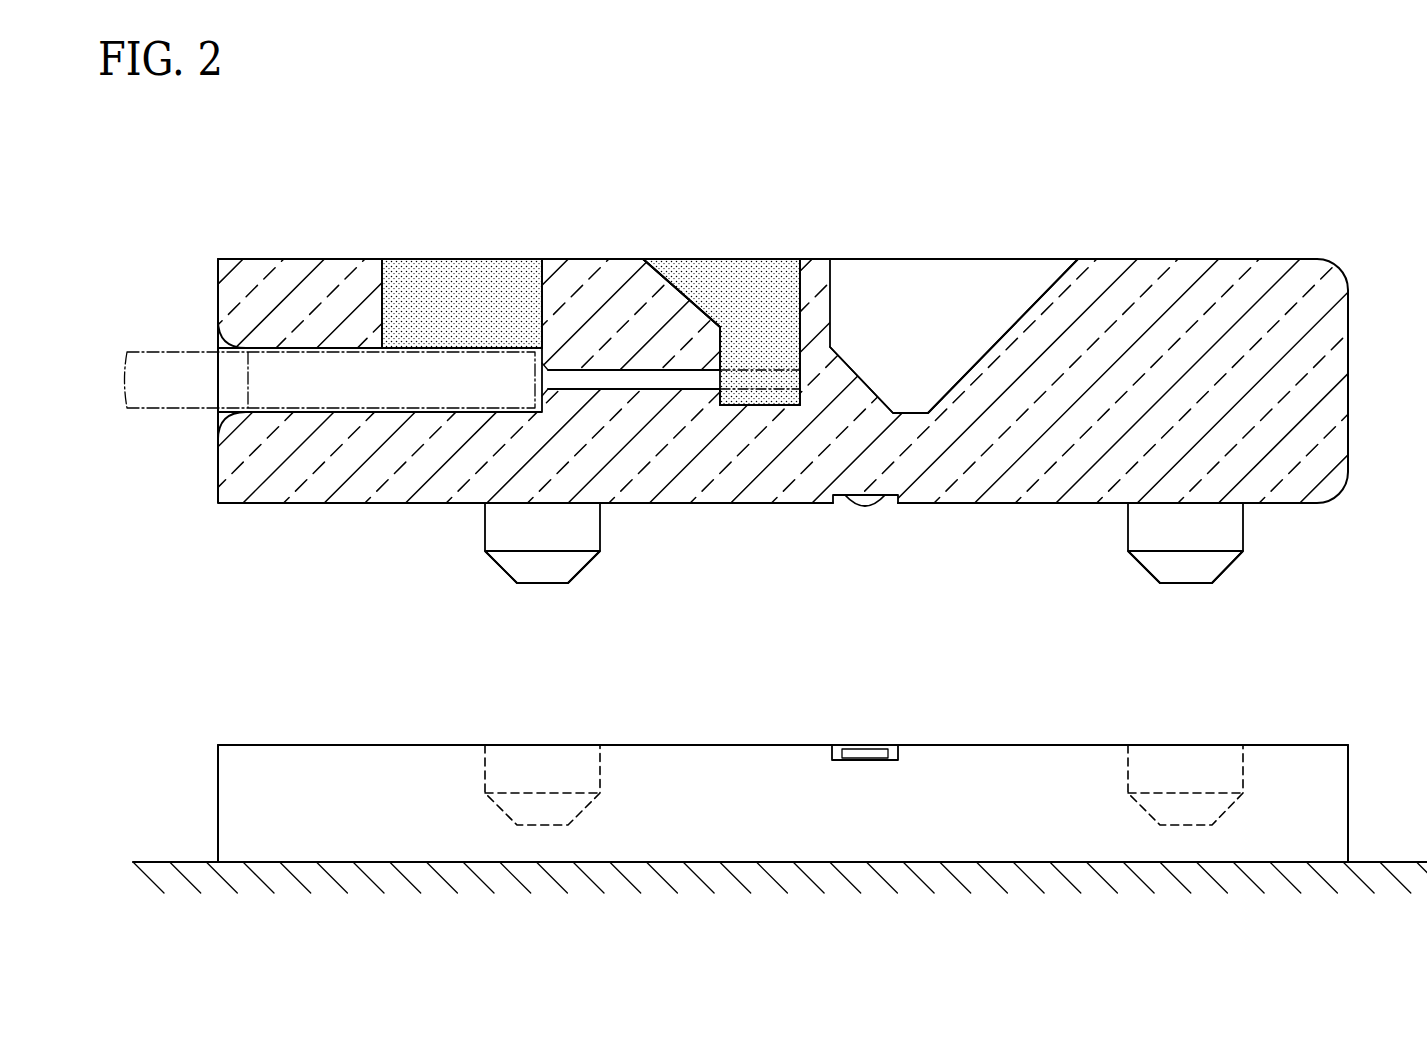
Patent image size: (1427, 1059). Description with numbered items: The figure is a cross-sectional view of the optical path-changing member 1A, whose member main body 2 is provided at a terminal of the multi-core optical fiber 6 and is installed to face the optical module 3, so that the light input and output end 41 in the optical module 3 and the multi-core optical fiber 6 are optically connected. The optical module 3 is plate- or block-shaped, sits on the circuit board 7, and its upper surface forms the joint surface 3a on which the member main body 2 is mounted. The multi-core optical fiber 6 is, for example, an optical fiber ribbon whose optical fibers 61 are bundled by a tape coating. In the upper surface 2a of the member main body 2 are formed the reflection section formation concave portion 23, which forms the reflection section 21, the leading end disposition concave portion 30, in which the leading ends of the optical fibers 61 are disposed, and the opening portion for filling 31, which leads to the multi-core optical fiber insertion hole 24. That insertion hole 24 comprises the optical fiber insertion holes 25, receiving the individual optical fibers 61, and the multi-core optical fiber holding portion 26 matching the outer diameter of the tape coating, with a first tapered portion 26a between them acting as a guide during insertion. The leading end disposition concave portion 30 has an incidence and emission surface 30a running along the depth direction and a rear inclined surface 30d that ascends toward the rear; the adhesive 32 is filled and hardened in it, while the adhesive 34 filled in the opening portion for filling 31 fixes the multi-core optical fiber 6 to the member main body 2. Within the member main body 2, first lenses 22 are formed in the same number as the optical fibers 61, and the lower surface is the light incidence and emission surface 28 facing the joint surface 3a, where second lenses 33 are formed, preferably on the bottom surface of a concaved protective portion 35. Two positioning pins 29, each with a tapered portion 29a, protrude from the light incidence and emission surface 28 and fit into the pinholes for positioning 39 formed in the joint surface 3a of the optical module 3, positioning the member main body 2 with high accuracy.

The optical path-changing member 1A is at (1294, 228).
The member main body 2 is at (1172, 252).
The upper surface 2a is at (605, 262).
The optical module 3 is at (1356, 740).
The joint surface 3a is at (963, 745).
The multi-core optical fiber 6 is at (176, 345).
The circuit board 7 is at (1388, 868).
The reflection section 21 is at (867, 382).
The first lens 22 is at (870, 373).
The reflection section formation concave portion 23 is at (931, 280).
The multi-core optical fiber insertion hole 24 is at (237, 378).
The optical fiber insertion hole 25 is at (608, 372).
The multi-core optical fiber holding portion 26 is at (318, 356).
The first tapered portion 26a is at (543, 367).
The light incidence and emission surface 28 is at (1000, 503).
The positioning pin 29 is at (542, 584).
The tapered portion 29a is at (588, 566).
The leading end disposition concave portion 30 is at (755, 368).
The incidence and emission surface 30a is at (800, 398).
The rear inclined surface 30d is at (667, 266).
The opening portion for filling 31 is at (408, 262).
The adhesive 32 is at (703, 262).
The second lens 33 is at (866, 503).
The adhesive 34 is at (463, 262).
The concaved protective portion 35 is at (838, 503).
The pinhole for positioning 39 is at (600, 768).
The light input and output end 41 is at (864, 752).
The optical fiber 61 is at (790, 259).